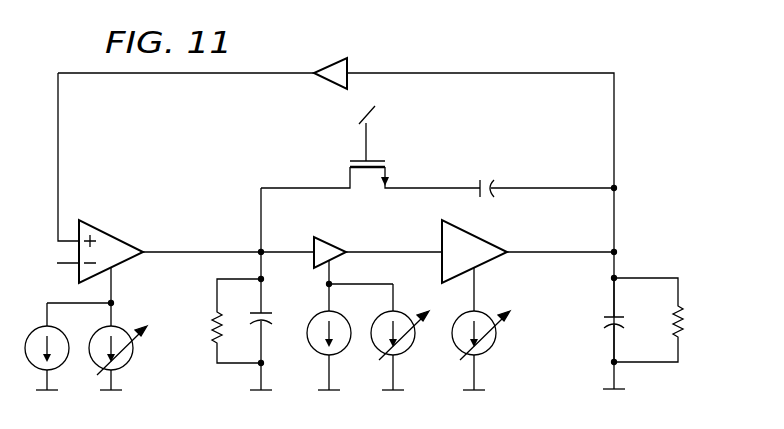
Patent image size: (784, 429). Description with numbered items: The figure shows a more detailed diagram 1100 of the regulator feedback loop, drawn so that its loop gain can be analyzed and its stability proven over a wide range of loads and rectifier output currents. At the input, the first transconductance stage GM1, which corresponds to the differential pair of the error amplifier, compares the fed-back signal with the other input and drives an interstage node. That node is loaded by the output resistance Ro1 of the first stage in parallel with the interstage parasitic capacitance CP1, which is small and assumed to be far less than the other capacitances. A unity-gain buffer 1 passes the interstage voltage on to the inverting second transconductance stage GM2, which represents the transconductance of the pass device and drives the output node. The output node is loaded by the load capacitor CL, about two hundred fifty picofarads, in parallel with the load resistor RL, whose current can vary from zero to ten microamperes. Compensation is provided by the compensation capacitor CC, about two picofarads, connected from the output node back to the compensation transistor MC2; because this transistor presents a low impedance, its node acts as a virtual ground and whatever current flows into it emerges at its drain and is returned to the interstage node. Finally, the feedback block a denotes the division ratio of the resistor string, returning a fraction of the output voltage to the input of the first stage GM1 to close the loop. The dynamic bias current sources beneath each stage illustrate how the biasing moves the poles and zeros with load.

The feedback loop diagram 1100 is at (666, 197).
The first transconductance stage GM1 is at (88, 303).
The second transconductance stage GM2 is at (479, 303).
The unity-gain buffer 1 is at (368, 304).
The feedback division block a is at (330, 67).
The compensation transistor MC2 is at (370, 147).
The compensation capacitor CC is at (543, 175).
The interstage parasitic capacitance CP1 is at (275, 321).
The output resistance of first stage Ro1 is at (219, 321).
The load capacitor CL is at (628, 320).
The load resistor RL is at (661, 320).